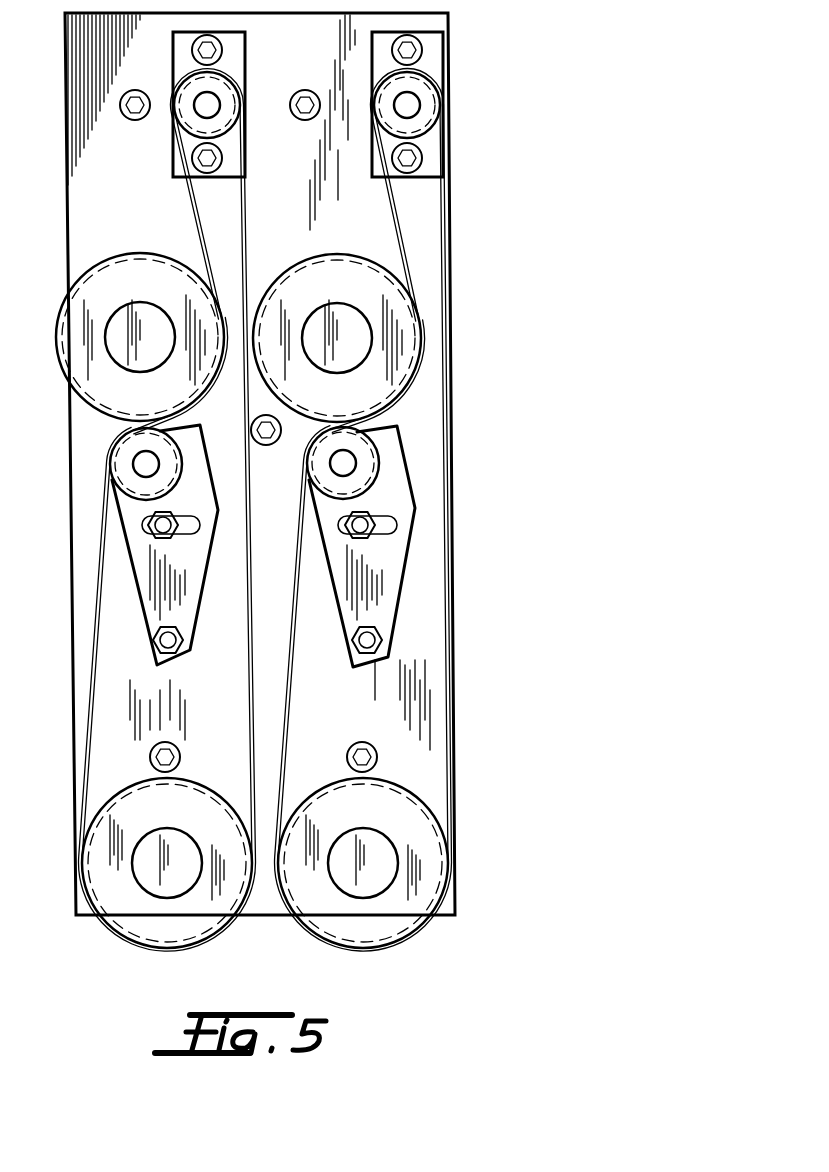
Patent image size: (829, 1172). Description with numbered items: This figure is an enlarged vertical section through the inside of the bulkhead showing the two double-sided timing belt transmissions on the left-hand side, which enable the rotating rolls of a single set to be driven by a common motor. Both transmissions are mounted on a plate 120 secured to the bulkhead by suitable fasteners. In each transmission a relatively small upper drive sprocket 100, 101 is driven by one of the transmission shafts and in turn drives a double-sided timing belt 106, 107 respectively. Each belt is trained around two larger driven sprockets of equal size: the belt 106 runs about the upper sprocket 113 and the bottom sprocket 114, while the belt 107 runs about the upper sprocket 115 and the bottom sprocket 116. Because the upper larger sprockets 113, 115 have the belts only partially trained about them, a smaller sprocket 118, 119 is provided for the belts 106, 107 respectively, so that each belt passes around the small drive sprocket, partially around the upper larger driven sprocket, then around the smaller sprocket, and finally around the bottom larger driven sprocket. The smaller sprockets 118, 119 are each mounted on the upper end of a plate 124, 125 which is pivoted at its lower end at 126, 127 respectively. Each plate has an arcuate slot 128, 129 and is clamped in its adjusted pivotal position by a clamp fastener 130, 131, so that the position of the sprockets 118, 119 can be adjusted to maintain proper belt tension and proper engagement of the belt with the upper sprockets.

The small sprocket 100 is at (420, 133).
The small sprocket 101 is at (222, 130).
The double-sided timing belt 106 is at (443, 667).
The double-sided timing belt 107 is at (96, 663).
The upper larger driven sprocket 113 is at (305, 283).
The bottom larger driven sprocket 114 is at (430, 868).
The upper larger driven sprocket 115 is at (138, 278).
The bottom larger driven sprocket 116 is at (105, 875).
The smaller sprocket 118 is at (320, 466).
The smaller sprocket 119 is at (120, 463).
The plate 120 is at (450, 222).
The plate 124 is at (395, 585).
The plate 125 is at (198, 588).
The pivot 126 is at (353, 646).
The pivot 127 is at (183, 650).
The arcuate slot 128 is at (397, 527).
The arcuate slot 129 is at (172, 537).
The clamp fastener 130 is at (358, 518).
The clamp fastener 131 is at (178, 541).